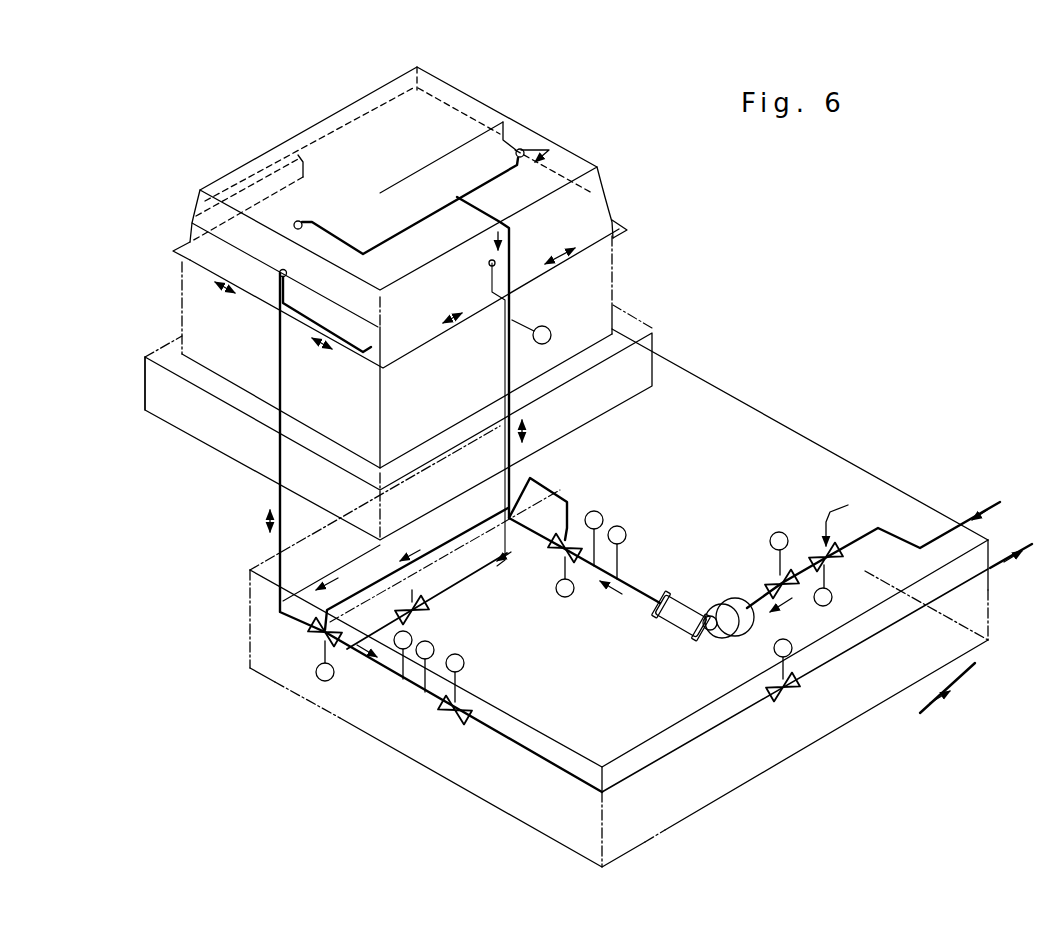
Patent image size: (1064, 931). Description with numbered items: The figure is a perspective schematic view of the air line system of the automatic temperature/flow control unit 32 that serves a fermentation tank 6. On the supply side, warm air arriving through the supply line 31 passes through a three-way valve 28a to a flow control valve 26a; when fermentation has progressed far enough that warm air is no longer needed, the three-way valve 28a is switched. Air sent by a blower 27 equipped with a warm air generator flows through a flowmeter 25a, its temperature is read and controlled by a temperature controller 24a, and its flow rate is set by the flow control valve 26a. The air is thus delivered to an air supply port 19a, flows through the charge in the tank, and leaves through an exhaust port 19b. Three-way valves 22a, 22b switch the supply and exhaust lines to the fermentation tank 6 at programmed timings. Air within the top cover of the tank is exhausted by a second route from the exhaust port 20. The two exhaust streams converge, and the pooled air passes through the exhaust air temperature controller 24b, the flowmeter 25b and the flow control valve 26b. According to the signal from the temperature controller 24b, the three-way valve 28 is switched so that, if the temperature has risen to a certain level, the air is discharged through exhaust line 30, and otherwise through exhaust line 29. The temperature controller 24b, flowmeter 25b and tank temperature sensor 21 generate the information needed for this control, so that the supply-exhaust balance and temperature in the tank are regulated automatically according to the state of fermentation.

The fermentation tank 6 is at (342, 105).
The air supply port 19a is at (513, 141).
The exhaust port 19b is at (302, 157).
The exhaust port 20 is at (505, 135).
The tank temperature sensor 21 is at (551, 331).
The three-way valve 22a is at (572, 533).
The three-way valve 22b is at (318, 641).
The temperature controller 24a is at (598, 511).
The exhaust air temperature controller 24b is at (400, 672).
The flowmeter 25a is at (620, 526).
The flowmeter 25b is at (427, 690).
The flow control valve 26a is at (770, 580).
The flow control valve 26b is at (452, 716).
The blower 27 is at (692, 597).
The three-way valve 28 is at (783, 697).
The three-way valve 28a is at (832, 548).
The exhaust line 29 is at (952, 682).
The exhaust line 30 is at (1022, 543).
The supply line 31 is at (966, 516).
The automatic temperature/flow control unit 32 is at (797, 423).